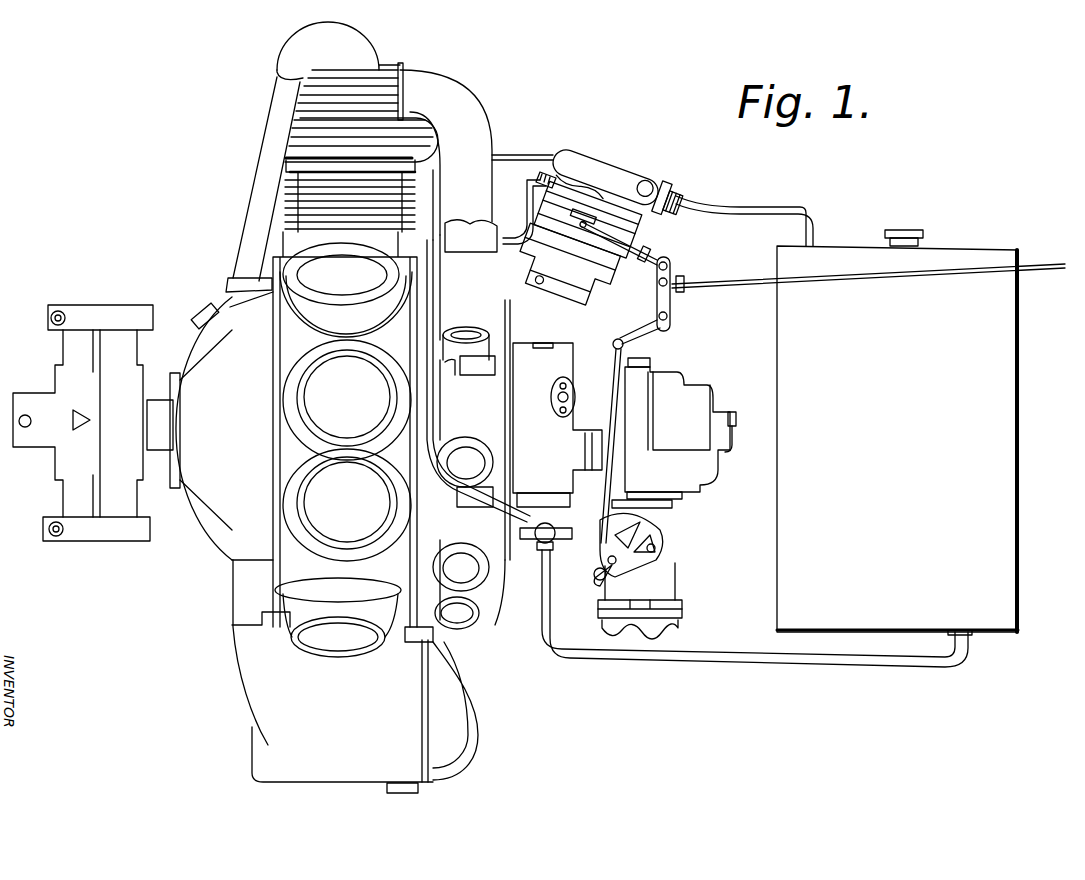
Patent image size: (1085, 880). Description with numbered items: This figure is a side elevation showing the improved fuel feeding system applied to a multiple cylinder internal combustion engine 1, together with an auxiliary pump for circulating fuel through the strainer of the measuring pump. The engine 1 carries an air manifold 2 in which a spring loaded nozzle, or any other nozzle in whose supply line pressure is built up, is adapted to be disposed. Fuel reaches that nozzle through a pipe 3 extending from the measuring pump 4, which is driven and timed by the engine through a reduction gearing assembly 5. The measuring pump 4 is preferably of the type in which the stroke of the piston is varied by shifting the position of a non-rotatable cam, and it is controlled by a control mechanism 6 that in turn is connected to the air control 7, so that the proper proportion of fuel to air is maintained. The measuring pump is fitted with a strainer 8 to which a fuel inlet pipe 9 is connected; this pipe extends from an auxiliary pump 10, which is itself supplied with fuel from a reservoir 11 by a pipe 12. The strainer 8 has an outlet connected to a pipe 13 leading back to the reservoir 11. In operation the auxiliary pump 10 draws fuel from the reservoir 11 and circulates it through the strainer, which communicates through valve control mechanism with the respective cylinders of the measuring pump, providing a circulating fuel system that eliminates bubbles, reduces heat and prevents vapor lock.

The multiple cylinder internal combustion engine 1 is at (245, 407).
The air manifold 2 is at (466, 334).
The pipe 3 is at (545, 176).
The measuring pump 4 is at (636, 220).
The reduction gearing assembly 5 is at (565, 266).
The control mechanism 6 is at (870, 274).
The air control 7 is at (665, 556).
The strainer 8 is at (590, 165).
The fuel inlet pipe 9 is at (478, 389).
The auxiliary pump 10 is at (542, 512).
The reservoir 11 is at (897, 431).
The pipe 12 is at (800, 664).
The pipe 13 is at (742, 208).